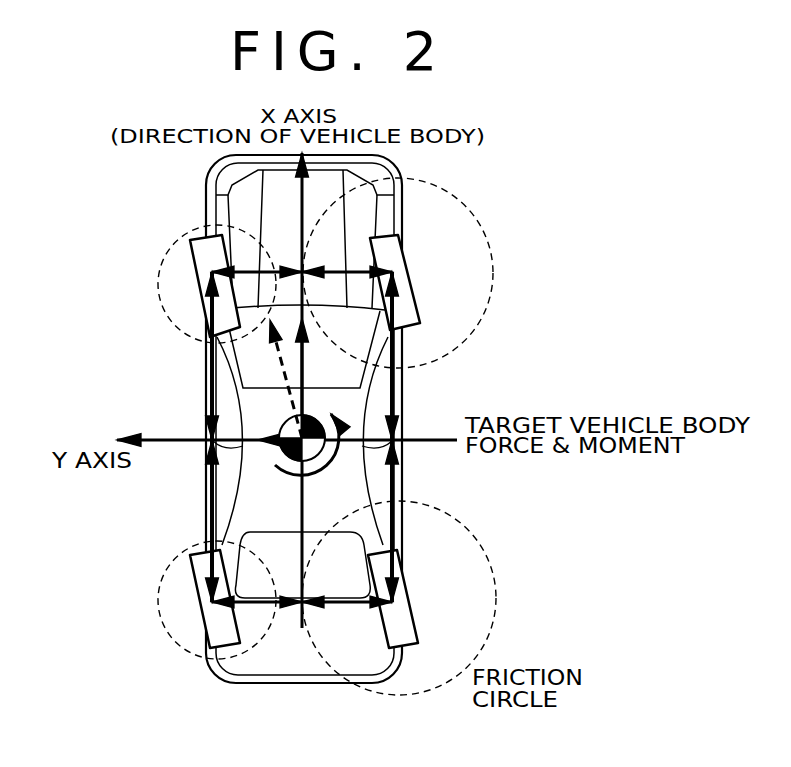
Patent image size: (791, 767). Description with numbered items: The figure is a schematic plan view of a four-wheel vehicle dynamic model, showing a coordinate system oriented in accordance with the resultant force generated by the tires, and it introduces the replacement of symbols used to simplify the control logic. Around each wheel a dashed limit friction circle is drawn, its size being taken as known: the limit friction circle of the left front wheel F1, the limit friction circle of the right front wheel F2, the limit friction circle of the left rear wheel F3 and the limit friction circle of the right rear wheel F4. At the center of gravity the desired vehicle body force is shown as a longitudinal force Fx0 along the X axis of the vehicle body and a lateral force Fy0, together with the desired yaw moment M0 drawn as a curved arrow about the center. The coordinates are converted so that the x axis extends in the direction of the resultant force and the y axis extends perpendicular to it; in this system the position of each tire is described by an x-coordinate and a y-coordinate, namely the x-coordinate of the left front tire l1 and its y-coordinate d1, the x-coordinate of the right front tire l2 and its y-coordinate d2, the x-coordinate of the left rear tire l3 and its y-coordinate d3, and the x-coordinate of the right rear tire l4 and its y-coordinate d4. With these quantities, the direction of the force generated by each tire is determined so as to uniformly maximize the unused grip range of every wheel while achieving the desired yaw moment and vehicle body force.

The limit friction circle of left front wheel F1 is at (201, 284).
The limit friction circle of right front wheel F2 is at (416, 273).
The limit friction circle of left rear wheel F3 is at (216, 610).
The limit friction circle of right rear wheel F4 is at (418, 598).
The longitudinal force Fx0 is at (329, 375).
The lateral force Fy0 is at (276, 379).
The yaw moment M0 is at (306, 465).
The y-coordinate of left front tire d1 is at (257, 258).
The y-coordinate of right front tire d2 is at (347, 257).
The y-coordinate of left rear tire d3 is at (257, 619).
The y-coordinate of right rear tire d4 is at (347, 619).
The x-coordinate of left front tire l1 is at (197, 356).
The x-coordinate of right front tire l2 is at (406, 356).
The x-coordinate of left rear tire l3 is at (188, 521).
The x-coordinate of right rear tire l4 is at (416, 521).